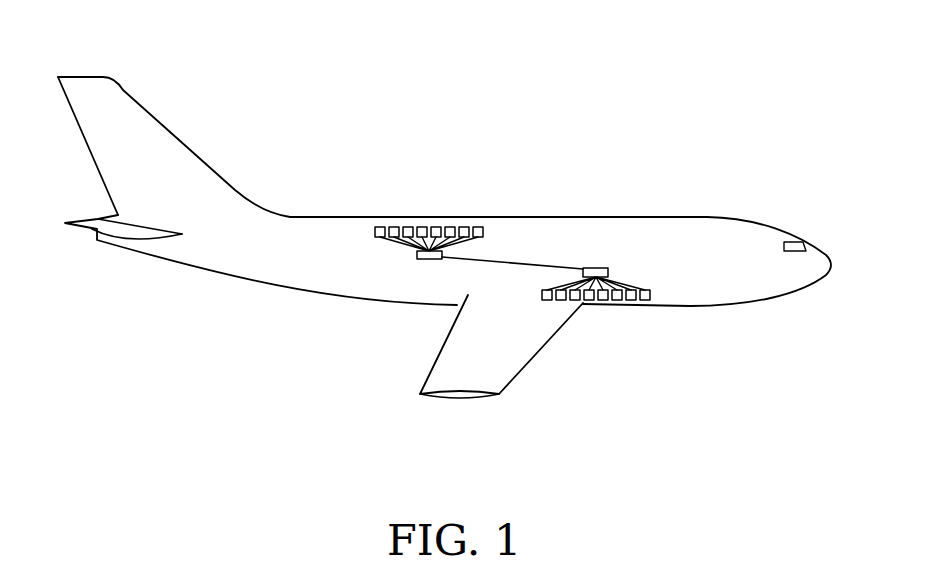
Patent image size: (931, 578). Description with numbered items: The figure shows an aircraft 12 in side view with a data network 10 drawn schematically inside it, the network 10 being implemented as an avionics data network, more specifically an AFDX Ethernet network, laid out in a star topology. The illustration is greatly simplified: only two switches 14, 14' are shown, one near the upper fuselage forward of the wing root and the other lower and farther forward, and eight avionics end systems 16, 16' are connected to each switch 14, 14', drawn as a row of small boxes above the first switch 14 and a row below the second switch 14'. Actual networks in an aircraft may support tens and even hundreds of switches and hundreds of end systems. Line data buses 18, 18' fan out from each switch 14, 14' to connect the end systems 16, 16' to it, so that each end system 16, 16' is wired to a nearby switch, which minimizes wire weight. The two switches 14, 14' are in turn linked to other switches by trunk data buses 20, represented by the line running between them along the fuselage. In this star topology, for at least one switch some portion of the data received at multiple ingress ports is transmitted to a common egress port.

The data network 10 is at (552, 250).
The aircraft 12 is at (694, 213).
The switch 14 is at (422, 266).
The switch 14' is at (613, 265).
The avionics end system 16 is at (422, 198).
The avionics end system 16' is at (598, 331).
The line data bus 18 is at (397, 227).
The line data bus 18' is at (579, 306).
The trunk data bus 20 is at (511, 262).